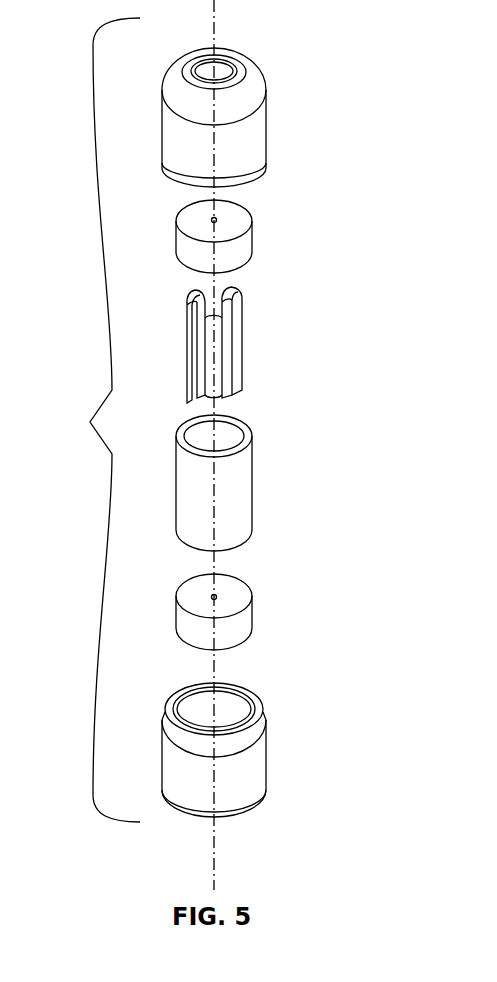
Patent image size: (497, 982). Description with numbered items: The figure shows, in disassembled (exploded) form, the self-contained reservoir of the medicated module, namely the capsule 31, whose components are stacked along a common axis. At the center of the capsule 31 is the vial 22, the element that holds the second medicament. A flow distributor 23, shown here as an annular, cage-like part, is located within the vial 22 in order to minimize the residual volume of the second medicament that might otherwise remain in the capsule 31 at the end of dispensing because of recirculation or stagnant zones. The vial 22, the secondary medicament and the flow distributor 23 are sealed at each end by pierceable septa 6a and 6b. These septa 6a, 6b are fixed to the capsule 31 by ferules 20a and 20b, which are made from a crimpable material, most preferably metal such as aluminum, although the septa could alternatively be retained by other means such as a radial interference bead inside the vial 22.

The capsule 31 is at (95, 420).
The ferule 20a is at (266, 128).
The septum 6a is at (253, 232).
The flow distributor 23 is at (242, 352).
The vial 22 is at (252, 482).
The septum 6b is at (253, 613).
The ferule 20b is at (266, 752).